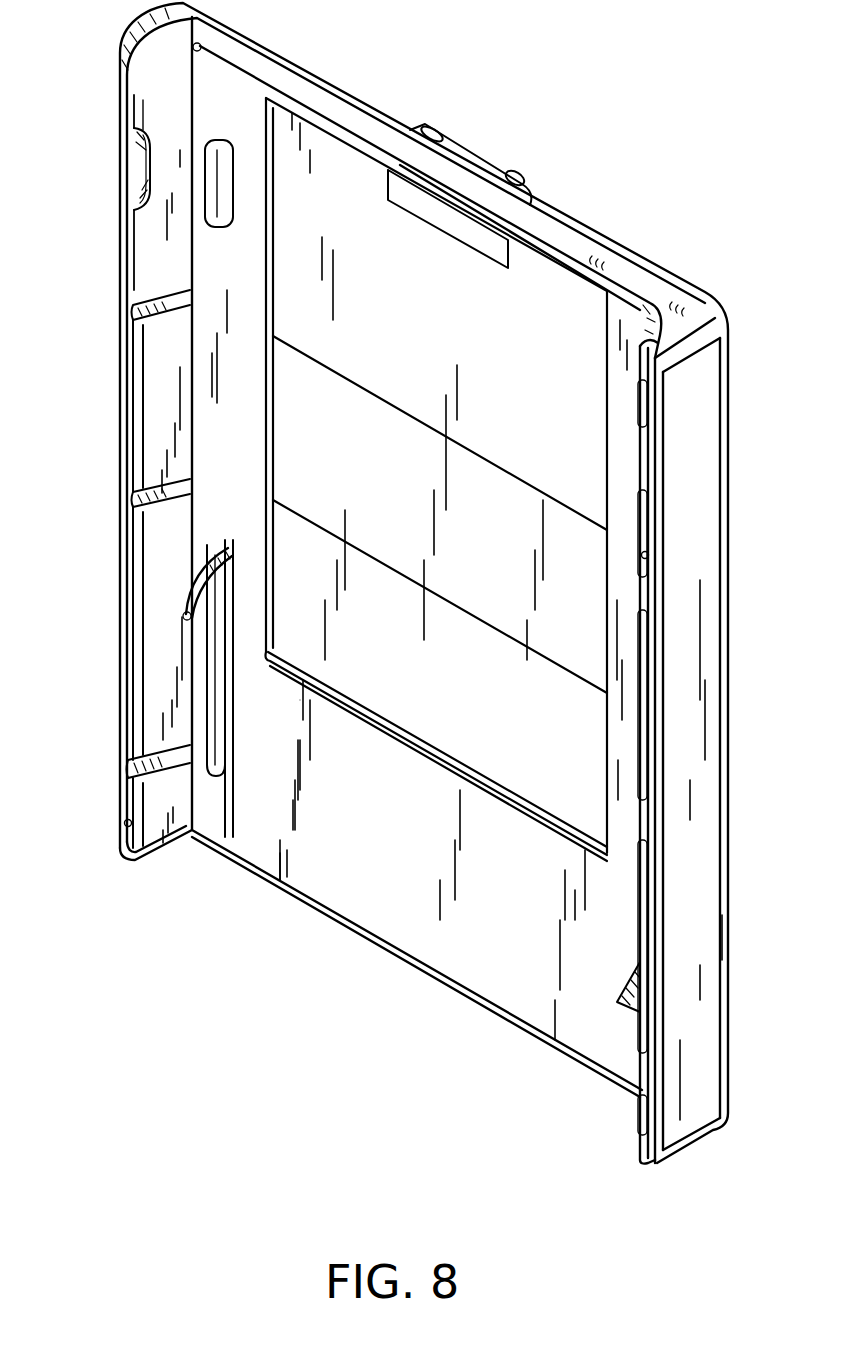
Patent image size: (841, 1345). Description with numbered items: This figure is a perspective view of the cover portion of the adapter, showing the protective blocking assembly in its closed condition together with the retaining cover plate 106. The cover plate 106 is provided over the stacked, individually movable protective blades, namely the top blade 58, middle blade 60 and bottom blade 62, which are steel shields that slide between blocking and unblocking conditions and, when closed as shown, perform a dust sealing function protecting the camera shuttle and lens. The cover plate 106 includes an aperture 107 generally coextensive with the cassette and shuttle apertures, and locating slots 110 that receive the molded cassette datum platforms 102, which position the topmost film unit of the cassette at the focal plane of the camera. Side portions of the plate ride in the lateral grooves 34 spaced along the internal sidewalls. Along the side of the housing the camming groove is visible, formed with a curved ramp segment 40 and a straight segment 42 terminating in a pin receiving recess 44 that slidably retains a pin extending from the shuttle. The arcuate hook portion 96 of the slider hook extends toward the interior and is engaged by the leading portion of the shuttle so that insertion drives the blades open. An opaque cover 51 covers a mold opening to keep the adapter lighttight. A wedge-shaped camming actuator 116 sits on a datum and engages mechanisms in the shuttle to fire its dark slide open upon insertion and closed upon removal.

The curved ramp segment 40 is at (135, 47).
The straight segment 42 is at (132, 110).
The pin receiving recess 44 is at (160, 170).
The locating slots 110 is at (155, 188).
The cassette datum platform 102 is at (208, 202).
The lateral groove 34 is at (152, 320).
The hook portion 96 is at (182, 600).
The opaque cover 51 is at (486, 244).
The top blade 58 is at (418, 318).
The middle blade 60 is at (413, 488).
The bottom blade 62 is at (396, 667).
The aperture 107 is at (427, 748).
The retaining cover plate 106 is at (400, 878).
The camming actuator 116 is at (620, 987).